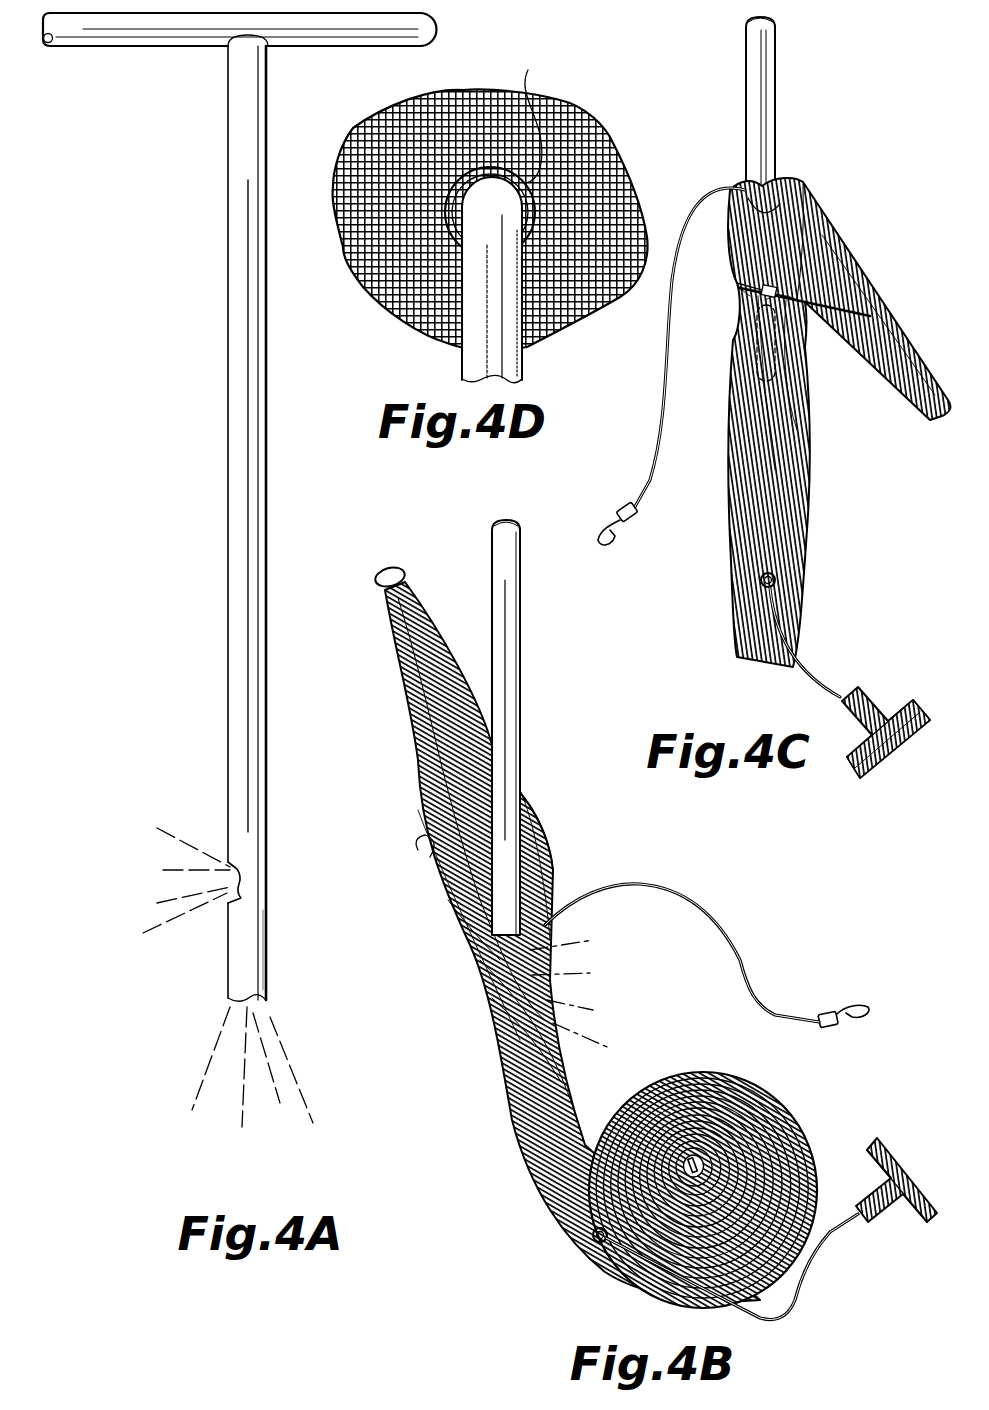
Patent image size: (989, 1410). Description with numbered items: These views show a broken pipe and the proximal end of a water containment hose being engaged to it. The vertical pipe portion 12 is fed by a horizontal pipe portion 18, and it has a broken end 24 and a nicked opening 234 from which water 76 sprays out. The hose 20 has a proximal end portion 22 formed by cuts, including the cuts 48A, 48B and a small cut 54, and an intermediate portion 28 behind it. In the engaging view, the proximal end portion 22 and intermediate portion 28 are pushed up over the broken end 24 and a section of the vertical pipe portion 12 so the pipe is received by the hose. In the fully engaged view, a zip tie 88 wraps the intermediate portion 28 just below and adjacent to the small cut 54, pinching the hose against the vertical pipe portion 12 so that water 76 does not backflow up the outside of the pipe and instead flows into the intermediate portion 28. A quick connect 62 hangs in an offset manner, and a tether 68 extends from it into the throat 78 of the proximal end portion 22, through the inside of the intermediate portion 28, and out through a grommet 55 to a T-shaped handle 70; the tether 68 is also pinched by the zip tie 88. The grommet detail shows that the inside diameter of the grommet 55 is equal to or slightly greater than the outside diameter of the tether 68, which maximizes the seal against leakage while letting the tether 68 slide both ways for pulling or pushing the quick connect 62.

In FIG. 4A, the vertical pipe portion 12 is at (226, 382).
In FIG. 4C, the vertical pipe portion 12 is at (776, 92).
In FIG. 4B, the vertical pipe portion 12 is at (521, 645).
In FIG. 4A, the horizontal pipe portion 18 is at (305, 47).
In FIG. 4D, the hose 20 is at (512, 194).
In FIG. 4C, the proximal end portion 22 is at (811, 372).
In FIG. 4B, the proximal end portion 22 is at (531, 932).
In FIG. 4A, the broken end 24 is at (267, 960).
In FIG. 4C, the broken end 24 is at (756, 366).
In FIG. 4D, the intermediate portion 28 is at (587, 113).
In FIG. 4C, the intermediate portion 28 is at (815, 470).
In FIG. 4B, the intermediate portion 28 is at (508, 1023).
In FIG. 4B, the cut 48A is at (530, 808).
In FIG. 4B, the cut 48B is at (410, 752).
In FIG. 4C, the small cut 54 is at (770, 208).
In FIG. 4B, the small cut 54 is at (492, 998).
In FIG. 4D, the grommet 55 is at (495, 147).
In FIG. 4C, the grommet 55 is at (777, 566).
In FIG. 4B, the grommet 55 is at (593, 1226).
In FIG. 4C, the quick connect 62 is at (603, 503).
In FIG. 4B, the quick connect 62 is at (868, 992).
In FIG. 4D, the tether 68 is at (514, 350).
In FIG. 4C, the tether 68 is at (662, 415).
In FIG. 4B, the tether 68 is at (708, 918).
In FIG. 4C, the T-shaped handle 70 is at (900, 700).
In FIG. 4B, the T-shaped handle 70 is at (907, 1163).
In FIG. 4A, the water 76 is at (188, 840).
In FIG. 4B, the water 76 is at (598, 1043).
In FIG. 4C, the throat 78 is at (788, 160).
In FIG. 4B, the throat 78 is at (482, 915).
In FIG. 4C, the zip tie 88 is at (750, 298).
In FIG. 4A, the opening 234 is at (240, 870).